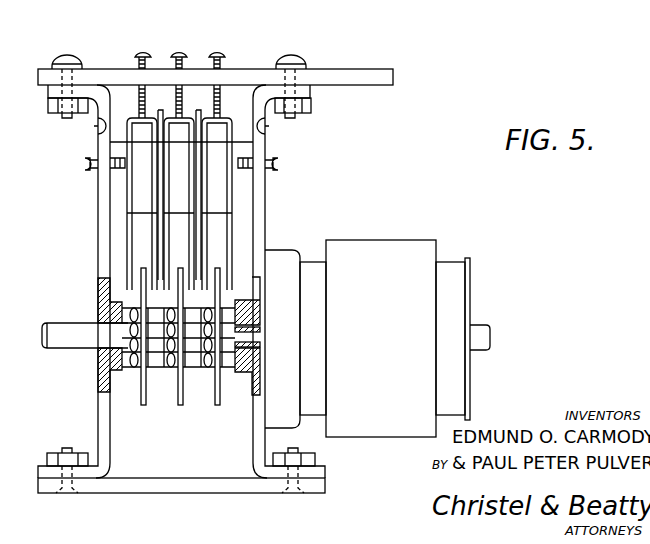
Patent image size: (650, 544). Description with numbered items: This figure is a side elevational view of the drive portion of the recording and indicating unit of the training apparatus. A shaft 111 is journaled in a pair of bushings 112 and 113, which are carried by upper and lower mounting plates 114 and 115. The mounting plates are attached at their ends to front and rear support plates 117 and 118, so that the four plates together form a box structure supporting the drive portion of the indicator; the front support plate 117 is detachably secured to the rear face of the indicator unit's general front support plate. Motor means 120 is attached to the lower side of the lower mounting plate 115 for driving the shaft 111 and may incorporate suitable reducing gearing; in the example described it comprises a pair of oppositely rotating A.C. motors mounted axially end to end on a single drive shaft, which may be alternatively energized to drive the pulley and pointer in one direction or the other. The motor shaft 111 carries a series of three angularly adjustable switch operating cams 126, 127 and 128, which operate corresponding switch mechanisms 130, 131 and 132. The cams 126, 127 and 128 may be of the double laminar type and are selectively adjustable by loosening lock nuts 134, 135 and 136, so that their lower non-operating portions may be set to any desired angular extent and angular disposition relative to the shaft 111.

The shaft 111 is at (66, 350).
The bushing 112 is at (104, 318).
The bushing 113 is at (266, 312).
The upper mounting plate 114 is at (100, 213).
The lower mounting plate 115 is at (267, 199).
The front support plate 117 is at (343, 71).
The rear support plate 118 is at (190, 489).
The motor means 120 is at (386, 241).
The switch operating cam 126 is at (217, 405).
The switch operating cam 127 is at (180, 405).
The switch operating cam 128 is at (143, 405).
The switch mechanism 130 is at (226, 117).
The switch mechanism 131 is at (177, 118).
The switch mechanism 132 is at (130, 118).
The lock nut 134 is at (207, 368).
The lock nut 135 is at (170, 368).
The lock nut 136 is at (133, 368).